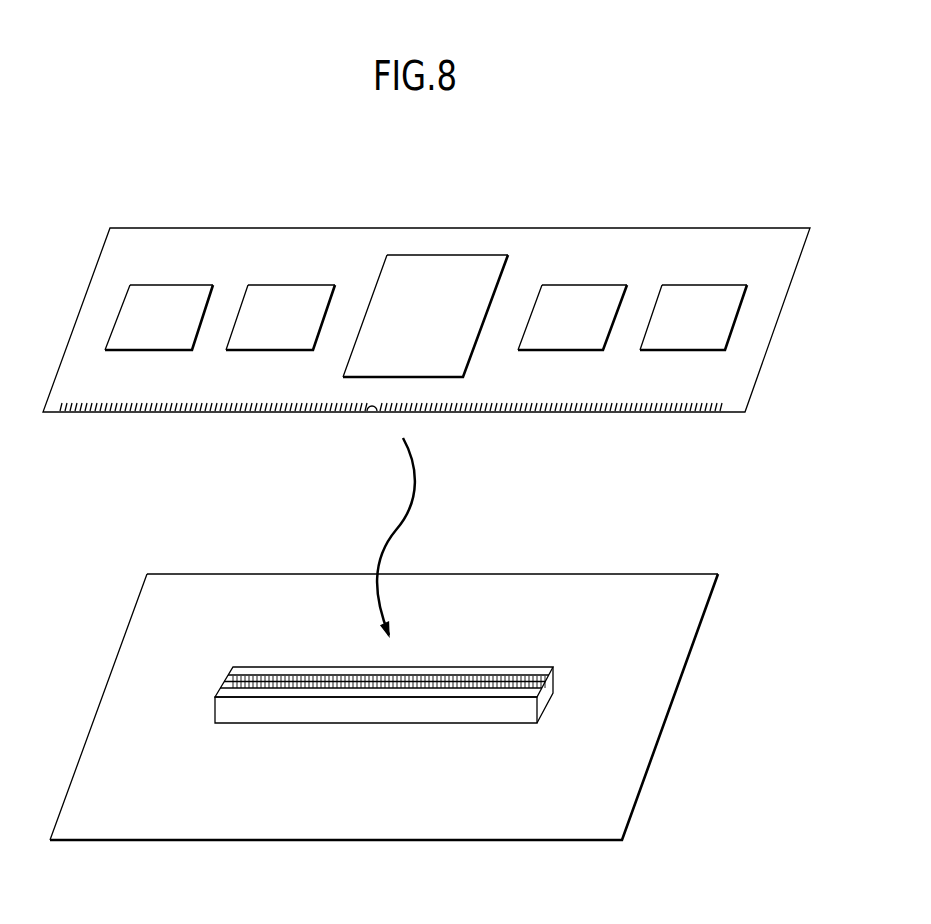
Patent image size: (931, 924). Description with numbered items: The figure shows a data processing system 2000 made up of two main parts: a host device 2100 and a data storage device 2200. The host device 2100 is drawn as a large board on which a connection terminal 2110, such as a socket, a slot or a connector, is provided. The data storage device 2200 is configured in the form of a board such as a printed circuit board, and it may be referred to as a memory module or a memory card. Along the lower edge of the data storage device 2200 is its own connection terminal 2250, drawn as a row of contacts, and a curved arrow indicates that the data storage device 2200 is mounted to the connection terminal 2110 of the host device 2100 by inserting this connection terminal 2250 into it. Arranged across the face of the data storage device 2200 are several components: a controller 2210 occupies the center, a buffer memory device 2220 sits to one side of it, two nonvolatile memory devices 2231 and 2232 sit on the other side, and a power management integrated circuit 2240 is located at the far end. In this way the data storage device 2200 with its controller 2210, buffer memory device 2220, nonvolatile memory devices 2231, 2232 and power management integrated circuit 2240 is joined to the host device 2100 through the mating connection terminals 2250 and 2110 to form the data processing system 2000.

The data processing system 2000 is at (82, 186).
The data storage device 2200 is at (426, 346).
The power management integrated circuit 2240 is at (159, 317).
The buffer memory device 2220 is at (280, 317).
The controller 2210 is at (425, 316).
The nonvolatile memory device 2231 is at (572, 317).
The nonvolatile memory device 2232 is at (693, 317).
The connection terminal 2250 is at (90, 405).
The host device 2100 is at (384, 707).
The connection terminal 2110 is at (541, 716).